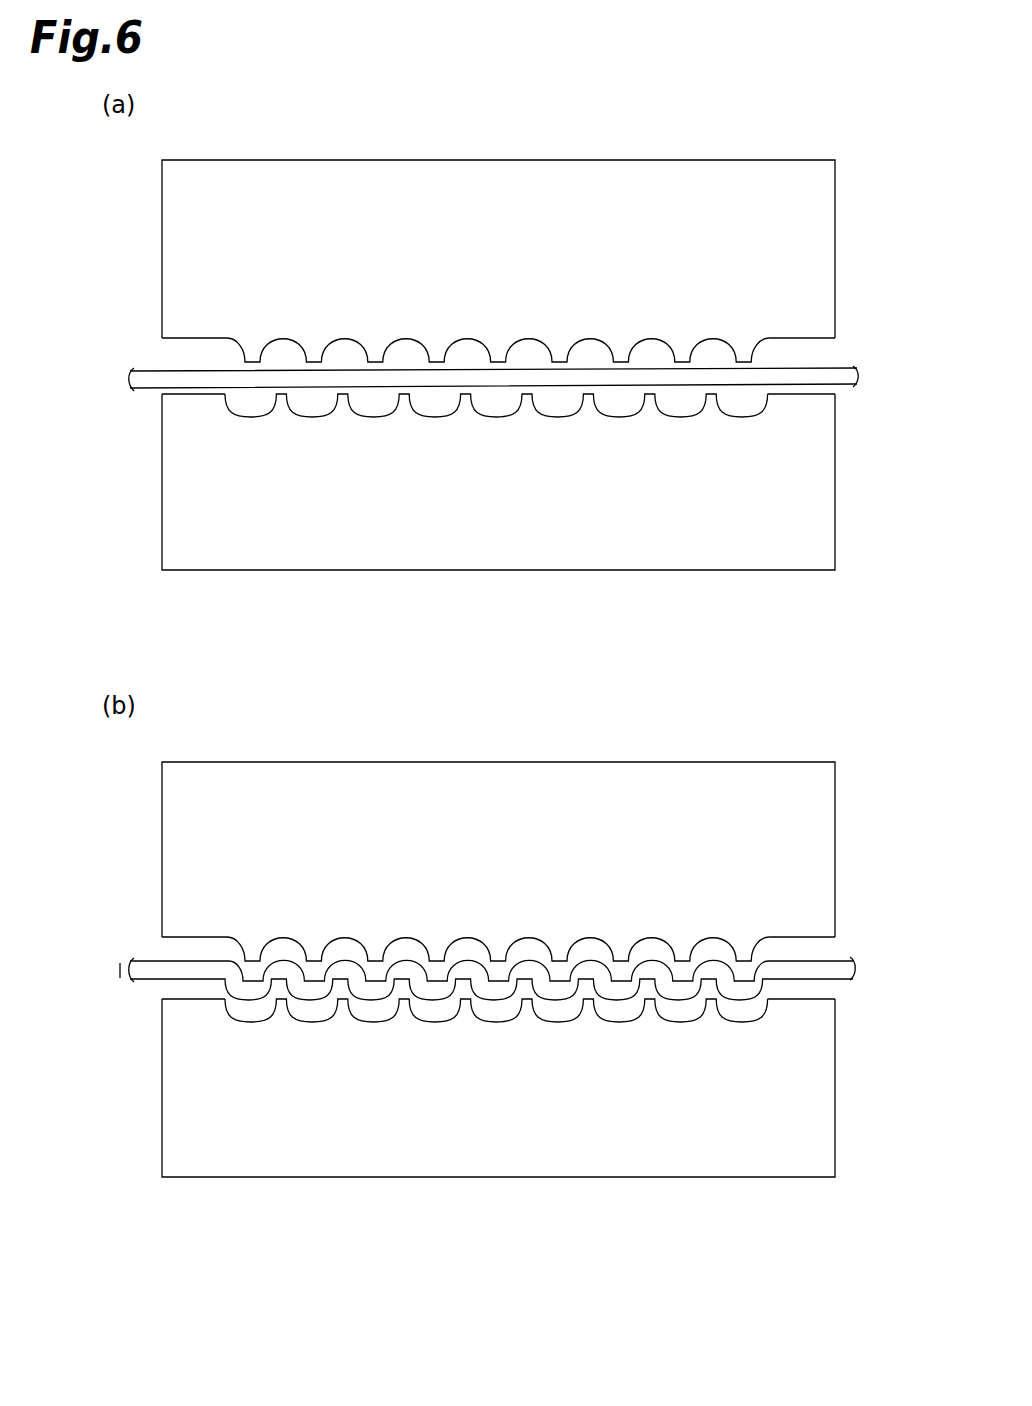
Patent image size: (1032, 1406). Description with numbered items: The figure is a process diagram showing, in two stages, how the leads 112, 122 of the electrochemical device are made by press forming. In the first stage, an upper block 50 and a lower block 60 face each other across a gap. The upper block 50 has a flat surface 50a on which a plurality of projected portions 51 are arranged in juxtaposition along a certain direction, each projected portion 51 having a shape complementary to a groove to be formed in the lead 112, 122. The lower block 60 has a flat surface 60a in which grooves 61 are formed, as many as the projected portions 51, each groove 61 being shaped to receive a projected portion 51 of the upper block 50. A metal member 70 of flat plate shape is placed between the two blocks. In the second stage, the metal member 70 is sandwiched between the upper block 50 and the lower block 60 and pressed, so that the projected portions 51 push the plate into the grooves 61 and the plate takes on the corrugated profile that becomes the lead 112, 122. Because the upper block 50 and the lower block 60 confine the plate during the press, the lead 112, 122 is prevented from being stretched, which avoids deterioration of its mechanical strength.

The upper block 50 is at (809, 156).
The projected portions 51 is at (362, 351).
The flat surface 50a is at (812, 338).
The lower block 60 is at (752, 577).
The grooves 61 is at (408, 398).
The flat surface 60a is at (817, 393).
The metal member 70 is at (650, 371).
The lead 112 is at (526, 959).
The lead 122 is at (487, 860).